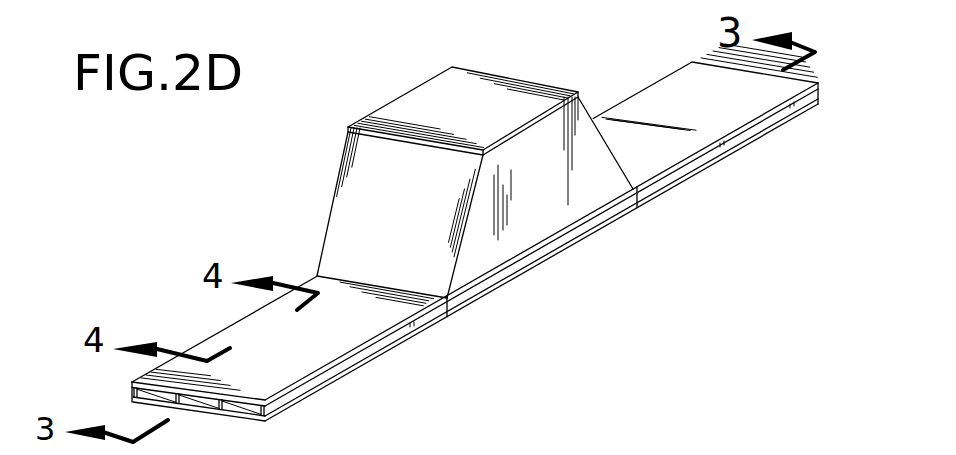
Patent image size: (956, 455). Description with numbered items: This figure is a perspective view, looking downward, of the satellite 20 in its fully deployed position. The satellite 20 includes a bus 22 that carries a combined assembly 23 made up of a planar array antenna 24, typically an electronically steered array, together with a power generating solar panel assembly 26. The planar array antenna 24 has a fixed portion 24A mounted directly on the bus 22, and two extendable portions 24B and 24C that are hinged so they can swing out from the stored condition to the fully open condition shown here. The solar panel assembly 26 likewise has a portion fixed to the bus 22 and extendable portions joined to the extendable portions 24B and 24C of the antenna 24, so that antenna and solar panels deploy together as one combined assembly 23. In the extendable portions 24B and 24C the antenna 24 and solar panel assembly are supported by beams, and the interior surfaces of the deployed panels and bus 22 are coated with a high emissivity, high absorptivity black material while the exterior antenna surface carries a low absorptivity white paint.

The satellite 20 is at (228, 199).
The bus 22 is at (418, 87).
The combined assembly 23 is at (668, 66).
The planar array antenna 24 is at (303, 402).
The fixed portion 24A is at (532, 268).
The extendable portion 24B is at (733, 150).
The extendable portion 24C is at (395, 346).
The solar panel assembly 26 is at (225, 340).